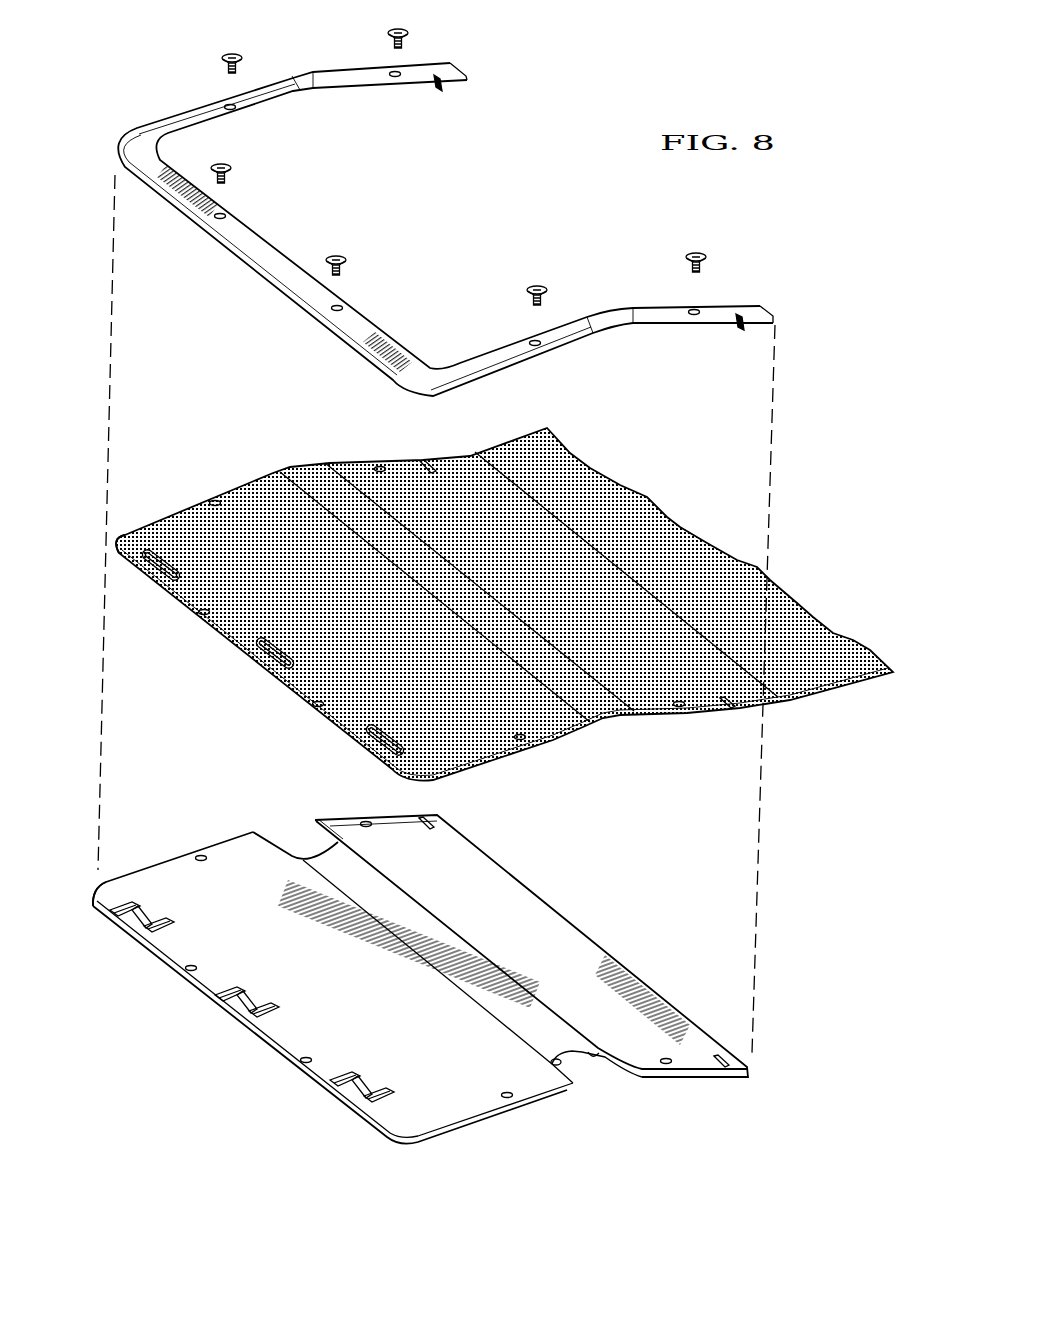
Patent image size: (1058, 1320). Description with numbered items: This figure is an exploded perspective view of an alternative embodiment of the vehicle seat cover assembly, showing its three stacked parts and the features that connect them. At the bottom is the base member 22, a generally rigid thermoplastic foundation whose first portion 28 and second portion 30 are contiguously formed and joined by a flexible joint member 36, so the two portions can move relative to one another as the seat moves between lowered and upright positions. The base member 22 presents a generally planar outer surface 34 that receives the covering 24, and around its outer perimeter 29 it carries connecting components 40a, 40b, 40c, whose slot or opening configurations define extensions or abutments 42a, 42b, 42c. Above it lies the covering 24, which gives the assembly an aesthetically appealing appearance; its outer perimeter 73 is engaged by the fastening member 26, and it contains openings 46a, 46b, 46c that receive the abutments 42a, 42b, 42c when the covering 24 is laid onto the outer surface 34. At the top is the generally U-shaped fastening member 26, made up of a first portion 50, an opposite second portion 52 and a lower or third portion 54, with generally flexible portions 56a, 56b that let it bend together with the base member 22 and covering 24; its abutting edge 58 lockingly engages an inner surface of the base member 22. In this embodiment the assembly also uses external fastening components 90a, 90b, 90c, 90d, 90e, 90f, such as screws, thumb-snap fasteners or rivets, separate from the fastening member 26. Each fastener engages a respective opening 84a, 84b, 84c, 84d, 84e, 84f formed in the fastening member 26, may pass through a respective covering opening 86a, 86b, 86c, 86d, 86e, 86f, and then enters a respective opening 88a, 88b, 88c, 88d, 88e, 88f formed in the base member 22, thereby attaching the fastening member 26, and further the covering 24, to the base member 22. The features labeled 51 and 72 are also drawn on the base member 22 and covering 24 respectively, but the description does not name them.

The base member 22 is at (578, 957).
The covering 24 is at (673, 533).
The fastening member 26 is at (300, 260).
The first portion 28 is at (490, 888).
The outer perimeter 29 is at (117, 890).
The second portion 30 is at (430, 1043).
The outer surface 34 is at (300, 890).
The joint member 36 is at (550, 1028).
The connecting component 40a is at (137, 928).
The connecting component 40b is at (235, 1027).
The connecting component 40c is at (340, 1113).
The abutment 42a is at (157, 940).
The abutment 42b is at (250, 1045).
The abutment 42c is at (373, 1107).
The opening 46a is at (153, 563).
The opening 46b is at (270, 650).
The opening 46c is at (380, 738).
The first portion 50 is at (177, 122).
The corner 51 is at (103, 908).
The second portion 52 is at (475, 367).
The third portion 54 is at (263, 268).
The flexible portion 56a is at (308, 80).
The flexible portion 56b is at (633, 320).
The abutting edge 58 is at (160, 190).
The upper surface 72 is at (280, 510).
The outer perimeter 73 is at (128, 532).
The opening 84a is at (235, 110).
The opening 84b is at (397, 78).
The opening 84c is at (533, 340).
The opening 84d is at (693, 310).
The opening 84e is at (224, 214).
The opening 84f is at (340, 307).
The covering opening 86a is at (215, 500).
The covering opening 86b is at (378, 465).
The covering opening 86c is at (520, 740).
The covering opening 86d is at (680, 707).
The covering opening 86e is at (197, 614).
The covering opening 86f is at (312, 707).
The opening 88a is at (202, 856).
The opening 88b is at (367, 822).
The opening 88c is at (507, 1098).
The opening 88d is at (667, 1066).
The opening 88e is at (178, 967).
The opening 88f is at (297, 1062).
The fastening component 90a is at (222, 55).
The fastening component 90b is at (387, 32).
The fastening component 90c is at (533, 286).
The fastening component 90d is at (693, 253).
The fastening component 90e is at (234, 165).
The fastening component 90f is at (343, 256).